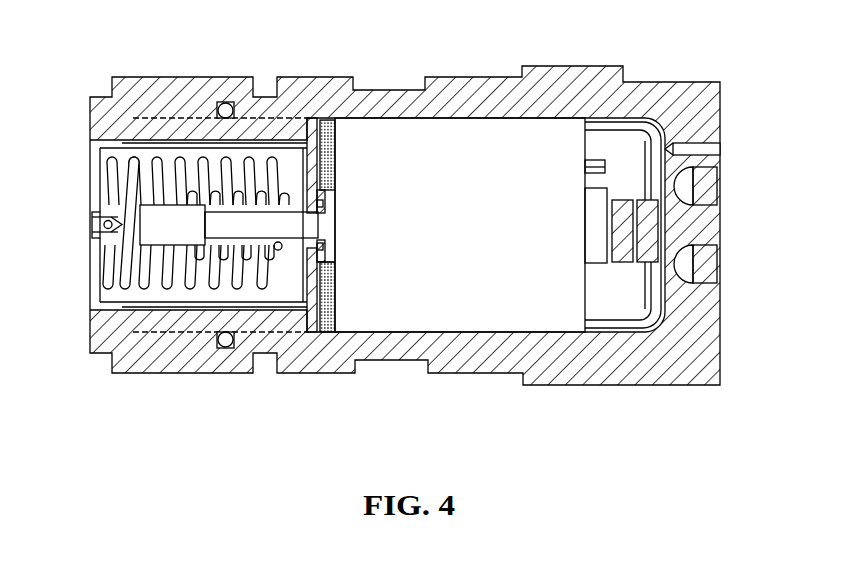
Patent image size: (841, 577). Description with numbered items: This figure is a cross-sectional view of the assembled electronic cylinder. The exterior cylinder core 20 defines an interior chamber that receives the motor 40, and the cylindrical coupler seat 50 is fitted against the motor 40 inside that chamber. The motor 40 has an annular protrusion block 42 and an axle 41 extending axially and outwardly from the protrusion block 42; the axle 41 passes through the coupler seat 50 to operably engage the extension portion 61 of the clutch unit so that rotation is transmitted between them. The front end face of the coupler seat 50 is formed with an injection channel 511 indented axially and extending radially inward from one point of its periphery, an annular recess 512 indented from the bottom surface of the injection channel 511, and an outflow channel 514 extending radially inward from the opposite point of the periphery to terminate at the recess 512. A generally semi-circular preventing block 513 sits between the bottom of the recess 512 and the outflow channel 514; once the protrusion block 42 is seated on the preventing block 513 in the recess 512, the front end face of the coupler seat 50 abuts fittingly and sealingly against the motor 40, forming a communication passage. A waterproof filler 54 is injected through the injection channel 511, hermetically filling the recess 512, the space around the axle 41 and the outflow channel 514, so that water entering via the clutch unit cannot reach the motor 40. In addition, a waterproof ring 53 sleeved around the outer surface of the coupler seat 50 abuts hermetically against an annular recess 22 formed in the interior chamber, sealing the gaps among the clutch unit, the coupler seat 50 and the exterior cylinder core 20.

The exterior cylinder core 20 is at (595, 80).
The annular recess 22 is at (238, 77).
The motor 40 is at (481, 118).
The axle 41 is at (272, 227).
The annular protrusion block 42 is at (333, 203).
The cylindrical coupler seat 50 is at (152, 132).
The waterproof ring 53 is at (222, 103).
The waterproof filler 54 is at (323, 302).
The extension portion 61 is at (98, 280).
The injection channel 511 is at (333, 157).
The annular recess 512 is at (318, 259).
The preventing block 513 is at (322, 253).
The outflow channel 514 is at (333, 317).